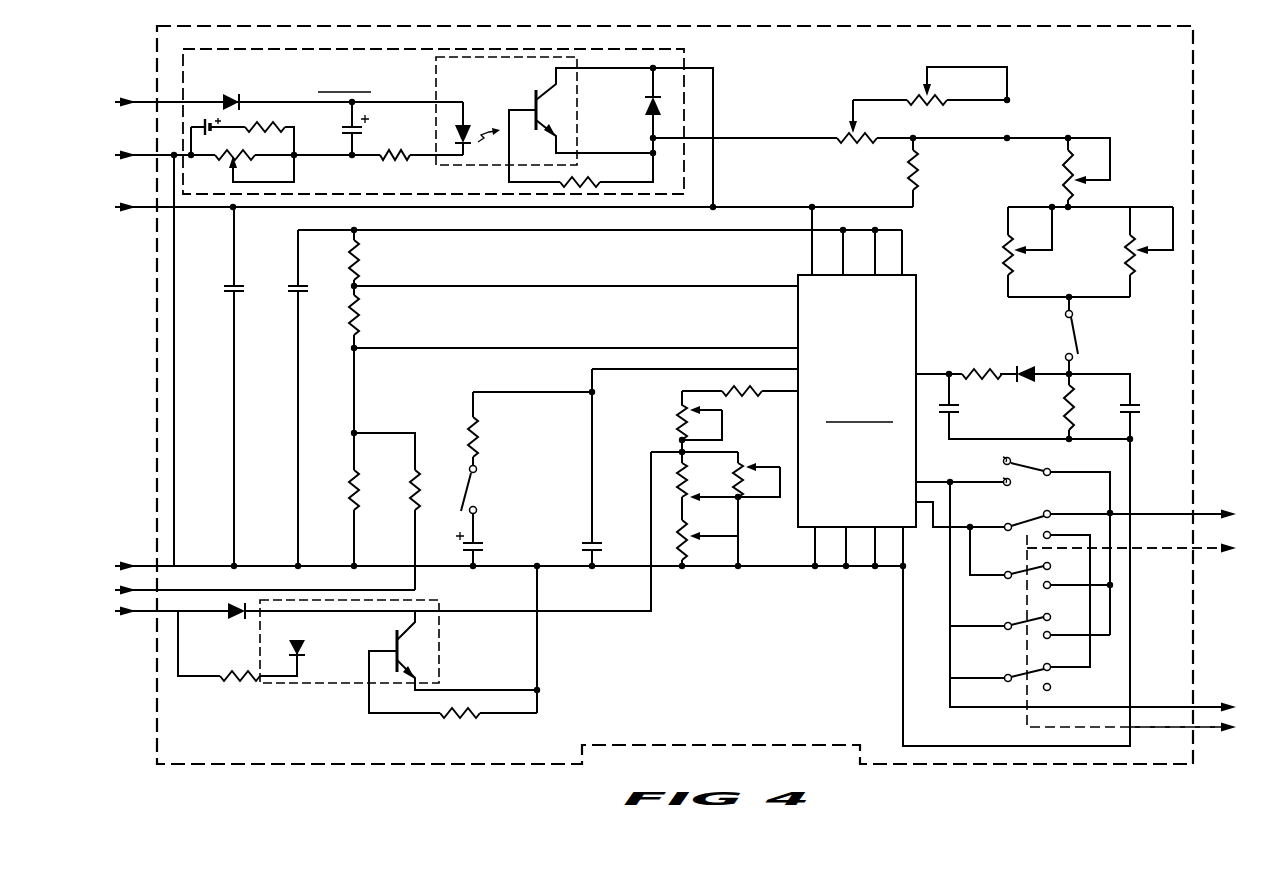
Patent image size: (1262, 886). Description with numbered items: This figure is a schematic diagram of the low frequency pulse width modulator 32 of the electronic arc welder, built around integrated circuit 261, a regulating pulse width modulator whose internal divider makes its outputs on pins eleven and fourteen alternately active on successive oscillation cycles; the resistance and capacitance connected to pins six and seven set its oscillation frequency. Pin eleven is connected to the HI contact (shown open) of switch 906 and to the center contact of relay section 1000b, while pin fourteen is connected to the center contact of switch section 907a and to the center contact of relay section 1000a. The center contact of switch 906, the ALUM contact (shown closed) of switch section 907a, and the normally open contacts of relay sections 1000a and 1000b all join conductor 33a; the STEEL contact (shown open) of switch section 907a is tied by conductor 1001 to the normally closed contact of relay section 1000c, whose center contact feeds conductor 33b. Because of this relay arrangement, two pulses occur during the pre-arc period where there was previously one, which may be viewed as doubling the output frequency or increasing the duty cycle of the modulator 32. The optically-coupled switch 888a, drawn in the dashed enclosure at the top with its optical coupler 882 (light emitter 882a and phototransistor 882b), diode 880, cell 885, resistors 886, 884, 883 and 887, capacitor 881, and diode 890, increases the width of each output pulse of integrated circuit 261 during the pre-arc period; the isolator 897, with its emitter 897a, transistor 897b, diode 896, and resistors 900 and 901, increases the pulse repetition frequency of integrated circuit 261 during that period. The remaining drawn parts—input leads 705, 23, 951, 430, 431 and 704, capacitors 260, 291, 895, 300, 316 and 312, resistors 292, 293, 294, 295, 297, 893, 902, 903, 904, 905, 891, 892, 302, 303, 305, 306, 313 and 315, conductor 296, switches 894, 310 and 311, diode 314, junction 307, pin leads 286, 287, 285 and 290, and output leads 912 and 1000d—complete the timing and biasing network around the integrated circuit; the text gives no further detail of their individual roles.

The low frequency modulator 32 is at (154, 308).
The optically-coupled switch 888a is at (684, 57).
The input lead 705 is at (149, 100).
The 80 volt return lead 23 is at (149, 158).
The switched +80 volt lead 951 is at (150, 205).
The +66.7 volt lead 430 is at (151, 564).
The +1 volt lead 431 is at (154, 589).
The input lead 704 is at (150, 613).
The diode 880 is at (232, 95).
The battery 885 is at (210, 132).
The resistor 886 is at (268, 124).
The potentiometer 884 is at (224, 160).
The capacitor 881 is at (364, 132).
The resistor 883 is at (390, 160).
The optical coupler 882 is at (440, 167).
The light emitting diode 882a is at (486, 120).
The phototransistor 882b is at (541, 93).
The resistor 887 is at (586, 178).
The diode 890 is at (646, 120).
The capacitor 260 is at (222, 290).
The capacitor 291 is at (287, 290).
The resistor 292 is at (362, 268).
The resistor 293 is at (362, 326).
The resistor 294 is at (348, 502).
The resistor 295 is at (410, 502).
The conductor 296 is at (606, 382).
The resistor 893 is at (481, 433).
The switch 894 is at (474, 496).
The capacitor 895 is at (462, 549).
The capacitor 300 is at (584, 538).
The resistor 297 is at (742, 402).
The potentiometer 905 is at (678, 424).
The potentiometer 903 is at (688, 484).
The potentiometer 902 is at (688, 526).
The potentiometer 904 is at (744, 462).
The integrated circuit 261 is at (798, 275).
The pin 4 lead 286 is at (812, 556).
The pin 5 lead 287 is at (844, 555).
The pin 8 lead 285 is at (873, 555).
The pin 10 lead 290 is at (901, 555).
The potentiometer 891 is at (850, 150).
The potentiometer 892 is at (930, 110).
The resistor 302 is at (922, 184).
The potentiometer 303 is at (1062, 166).
The potentiometer 305 is at (1002, 250).
The potentiometer 306 is at (1124, 260).
The junction 307 is at (1046, 302).
The switch 310 is at (1080, 340).
The switch contact 311 is at (1076, 372).
The resistor 315 is at (982, 370).
The diode 314 is at (1030, 368).
The capacitor 316 is at (962, 410).
The resistor 313 is at (1062, 410).
The capacitor 312 is at (1140, 406).
The switch 906 is at (1024, 475).
The switch section 907a is at (1034, 530).
The relay section 1000a is at (1034, 582).
The relay section 1000b is at (1018, 638).
The relay section 1000c is at (1018, 681).
The output lead 1000d is at (1196, 733).
The conductor 1001 is at (1094, 668).
The conductor 33a is at (1198, 512).
The conductor 33b is at (1198, 706).
The output lead 912 is at (1196, 562).
The diode 896 is at (232, 618).
The isolator 897 is at (440, 602).
The light emitting diode 897a is at (304, 642).
The phototransistor 897b is at (404, 632).
The resistor 900 is at (246, 682).
The resistor 901 is at (454, 717).